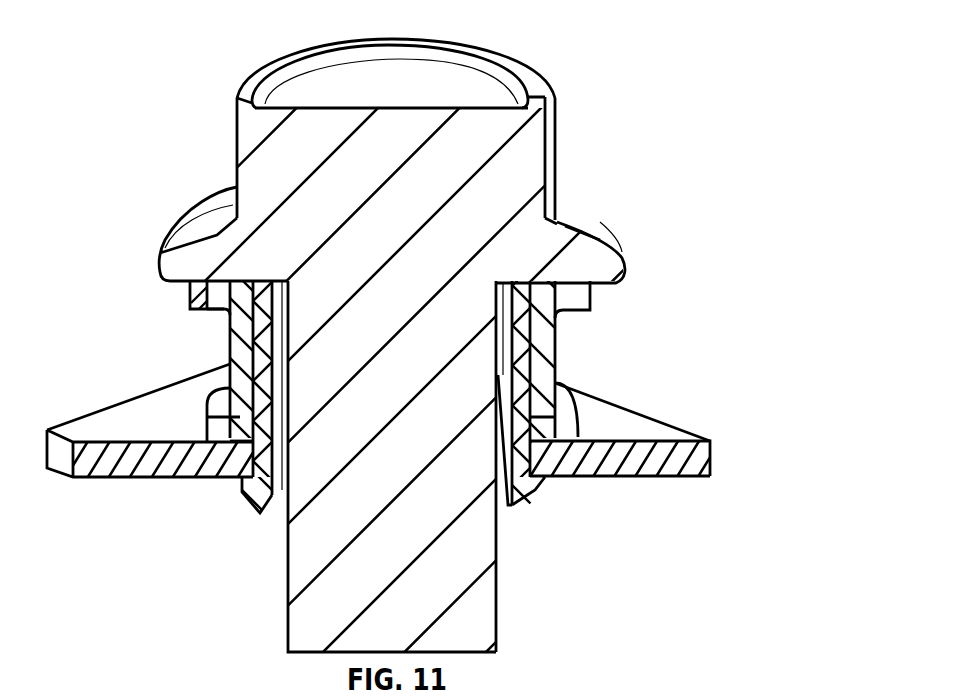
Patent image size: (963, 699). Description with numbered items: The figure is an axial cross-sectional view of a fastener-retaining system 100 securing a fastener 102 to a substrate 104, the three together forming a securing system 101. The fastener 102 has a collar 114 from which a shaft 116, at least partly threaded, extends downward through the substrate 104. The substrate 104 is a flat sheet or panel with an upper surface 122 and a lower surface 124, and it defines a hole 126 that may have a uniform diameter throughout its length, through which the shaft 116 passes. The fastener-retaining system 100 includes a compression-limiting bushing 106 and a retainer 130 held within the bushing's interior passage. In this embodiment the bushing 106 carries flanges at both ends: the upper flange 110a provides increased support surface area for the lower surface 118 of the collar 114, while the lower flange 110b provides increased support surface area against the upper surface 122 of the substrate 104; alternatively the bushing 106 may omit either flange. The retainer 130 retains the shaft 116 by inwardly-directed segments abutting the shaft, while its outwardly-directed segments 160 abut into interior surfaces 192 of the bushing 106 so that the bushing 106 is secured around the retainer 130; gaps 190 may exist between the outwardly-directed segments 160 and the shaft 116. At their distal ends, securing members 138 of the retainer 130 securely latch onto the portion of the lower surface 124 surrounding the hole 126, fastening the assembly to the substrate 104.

The fastener-retaining system 100 is at (580, 347).
The securing system 101 is at (141, 42).
The fastener 102 is at (517, 564).
The substrate 104 is at (660, 432).
The compression-limiting bushing 106 is at (190, 298).
The flange 110a is at (210, 309).
The flange 110b is at (227, 388).
The collar 114 is at (597, 228).
The shaft 116 is at (497, 617).
The lower surface 118 is at (605, 284).
The upper surface 122 is at (610, 415).
The lower surface 124 is at (645, 480).
The hole 126 is at (228, 432).
The retainer 130 is at (521, 320).
The securing members 138 is at (255, 505).
The outwardly-directed segments 160 is at (520, 393).
The gaps 190 is at (287, 322).
The interior surfaces 192 is at (242, 376).